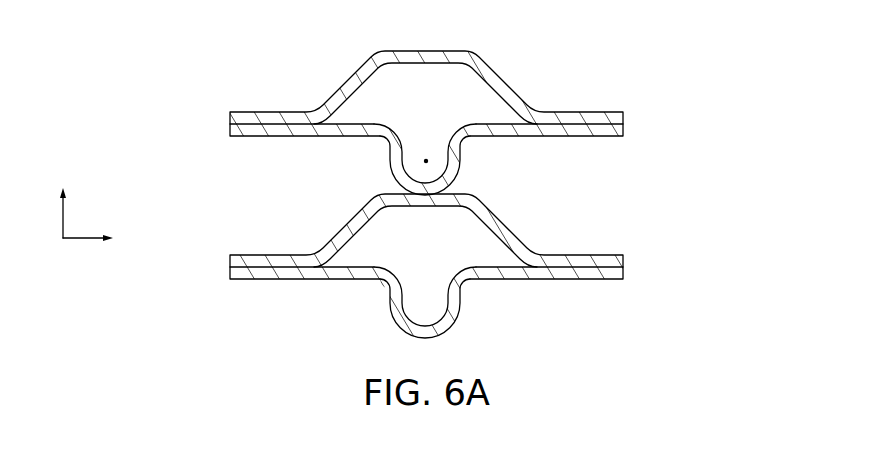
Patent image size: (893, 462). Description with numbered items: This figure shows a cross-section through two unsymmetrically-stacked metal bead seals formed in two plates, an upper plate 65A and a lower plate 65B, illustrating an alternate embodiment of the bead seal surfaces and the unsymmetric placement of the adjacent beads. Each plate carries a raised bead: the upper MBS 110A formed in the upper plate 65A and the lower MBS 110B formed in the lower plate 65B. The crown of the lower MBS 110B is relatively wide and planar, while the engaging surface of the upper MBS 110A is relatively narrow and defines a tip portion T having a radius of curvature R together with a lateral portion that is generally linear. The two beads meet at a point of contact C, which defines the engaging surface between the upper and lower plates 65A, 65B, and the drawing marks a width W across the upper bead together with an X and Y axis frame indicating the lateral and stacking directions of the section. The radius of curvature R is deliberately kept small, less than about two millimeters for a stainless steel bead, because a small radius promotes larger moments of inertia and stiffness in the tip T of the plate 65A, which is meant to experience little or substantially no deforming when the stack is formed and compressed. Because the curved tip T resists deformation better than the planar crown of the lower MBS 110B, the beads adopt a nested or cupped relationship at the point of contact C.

The upper plate 65A is at (631, 98).
The lower plate 65B is at (632, 292).
The upper MBS 110A is at (463, 137).
The lower MBS 110B is at (460, 290).
The well width W is at (475, 120).
The radius of curvature R is at (435, 180).
The tip T is at (458, 173).
The point of contact C is at (427, 206).
The X axis X is at (95, 238).
The Y axis Y is at (61, 201).